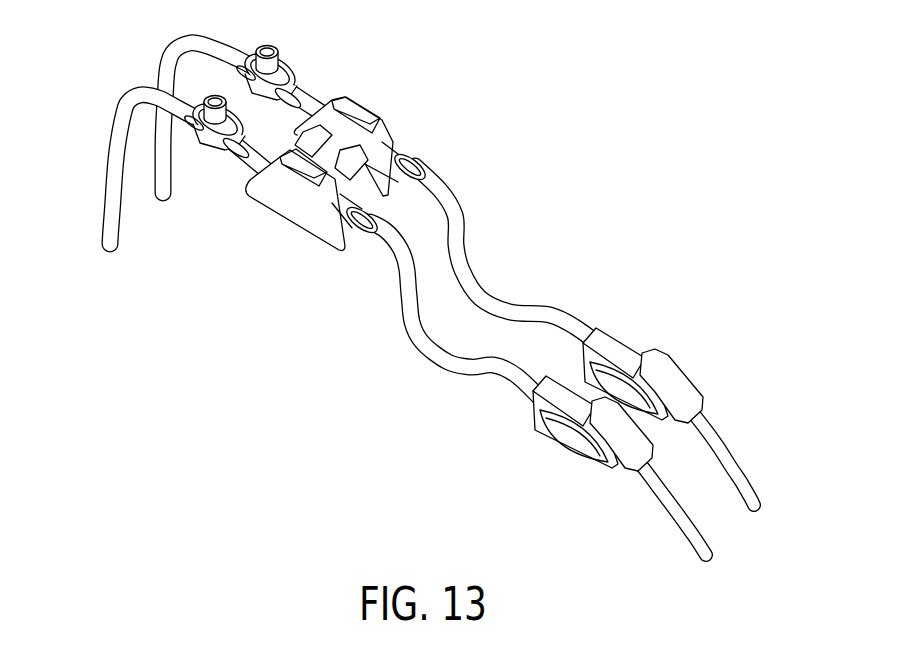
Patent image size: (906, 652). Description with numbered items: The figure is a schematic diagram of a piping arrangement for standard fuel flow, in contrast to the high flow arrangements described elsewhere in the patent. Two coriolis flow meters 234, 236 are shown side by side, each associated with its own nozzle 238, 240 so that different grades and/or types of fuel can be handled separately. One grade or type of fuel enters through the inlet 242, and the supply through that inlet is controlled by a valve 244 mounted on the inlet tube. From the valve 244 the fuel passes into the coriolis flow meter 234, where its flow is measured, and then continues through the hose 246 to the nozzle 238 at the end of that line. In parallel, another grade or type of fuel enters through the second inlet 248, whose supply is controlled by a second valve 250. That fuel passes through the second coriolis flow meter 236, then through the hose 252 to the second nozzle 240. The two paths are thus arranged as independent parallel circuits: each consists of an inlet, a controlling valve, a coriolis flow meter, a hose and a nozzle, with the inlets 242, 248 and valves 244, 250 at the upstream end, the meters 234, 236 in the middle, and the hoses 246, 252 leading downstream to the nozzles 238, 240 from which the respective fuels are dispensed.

The coriolis flow meter 234 is at (298, 228).
The coriolis flow meter 236 is at (399, 147).
The nozzle 238 is at (563, 452).
The nozzle 240 is at (633, 347).
The inlet 242 is at (110, 250).
The valve 244 is at (208, 148).
The hose 246 is at (401, 325).
The inlet 248 is at (160, 194).
The valve 250 is at (288, 56).
The hose 252 is at (468, 240).